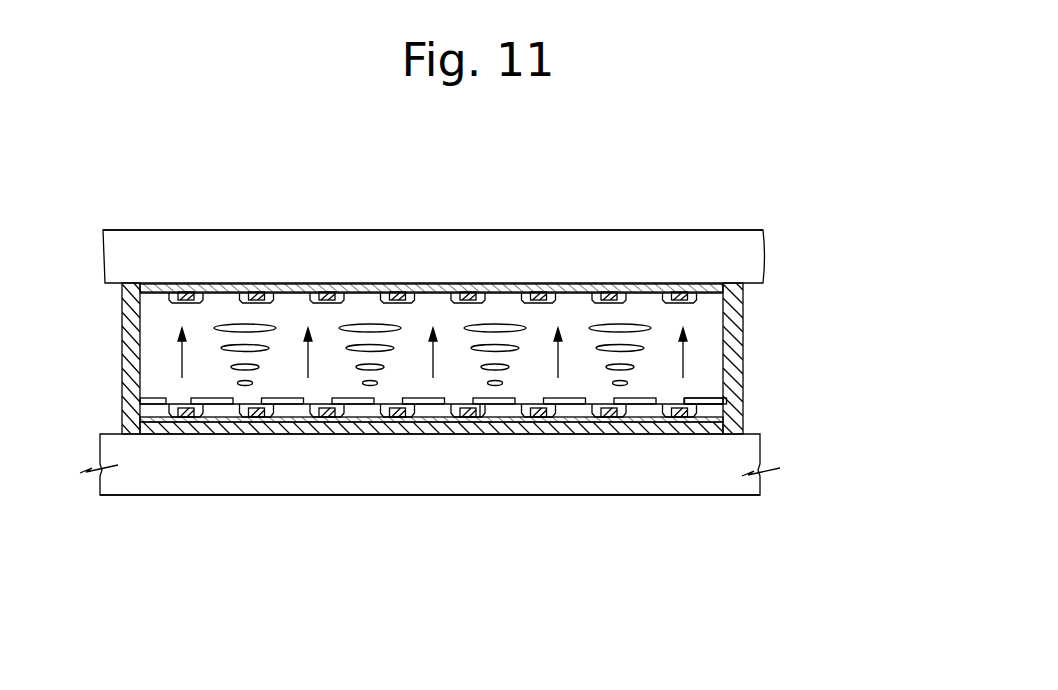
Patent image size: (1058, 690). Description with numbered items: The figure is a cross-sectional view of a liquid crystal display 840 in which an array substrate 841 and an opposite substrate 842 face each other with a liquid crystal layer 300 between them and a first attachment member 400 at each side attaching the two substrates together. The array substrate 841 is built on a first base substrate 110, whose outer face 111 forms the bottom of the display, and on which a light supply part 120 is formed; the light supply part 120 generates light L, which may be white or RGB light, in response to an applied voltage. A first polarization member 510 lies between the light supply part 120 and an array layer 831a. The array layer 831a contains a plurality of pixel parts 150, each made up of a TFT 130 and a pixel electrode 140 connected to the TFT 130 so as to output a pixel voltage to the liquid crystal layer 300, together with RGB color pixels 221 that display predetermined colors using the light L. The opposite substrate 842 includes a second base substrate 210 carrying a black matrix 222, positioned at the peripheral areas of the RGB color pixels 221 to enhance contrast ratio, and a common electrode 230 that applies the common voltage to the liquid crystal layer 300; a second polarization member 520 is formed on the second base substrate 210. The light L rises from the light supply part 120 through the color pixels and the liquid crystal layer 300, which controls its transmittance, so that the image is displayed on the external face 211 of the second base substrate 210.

The first base substrate 110 is at (358, 487).
The surface of lower substrate 111 is at (663, 497).
The light supply part 120 is at (582, 428).
The TFT 130 is at (470, 412).
The pixel electrode 140 is at (492, 406).
The pixel part 150 is at (488, 560).
The RGB color pixel 221 is at (433, 499).
The black matrix 222 is at (697, 296).
The common electrode 230 is at (713, 293).
The second base substrate 210 is at (755, 253).
The external face 211 is at (596, 230).
The liquid crystal layer 300 is at (150, 350).
The first attachment member 400 is at (124, 378).
The first polarization member 510 is at (281, 418).
The second polarization member 520 is at (422, 285).
The array layer 831a is at (537, 600).
The liquid crystal display 840 is at (662, 140).
The array substrate 841 is at (340, 645).
The opposite substrate 842 is at (853, 245).
The light L is at (182, 350).